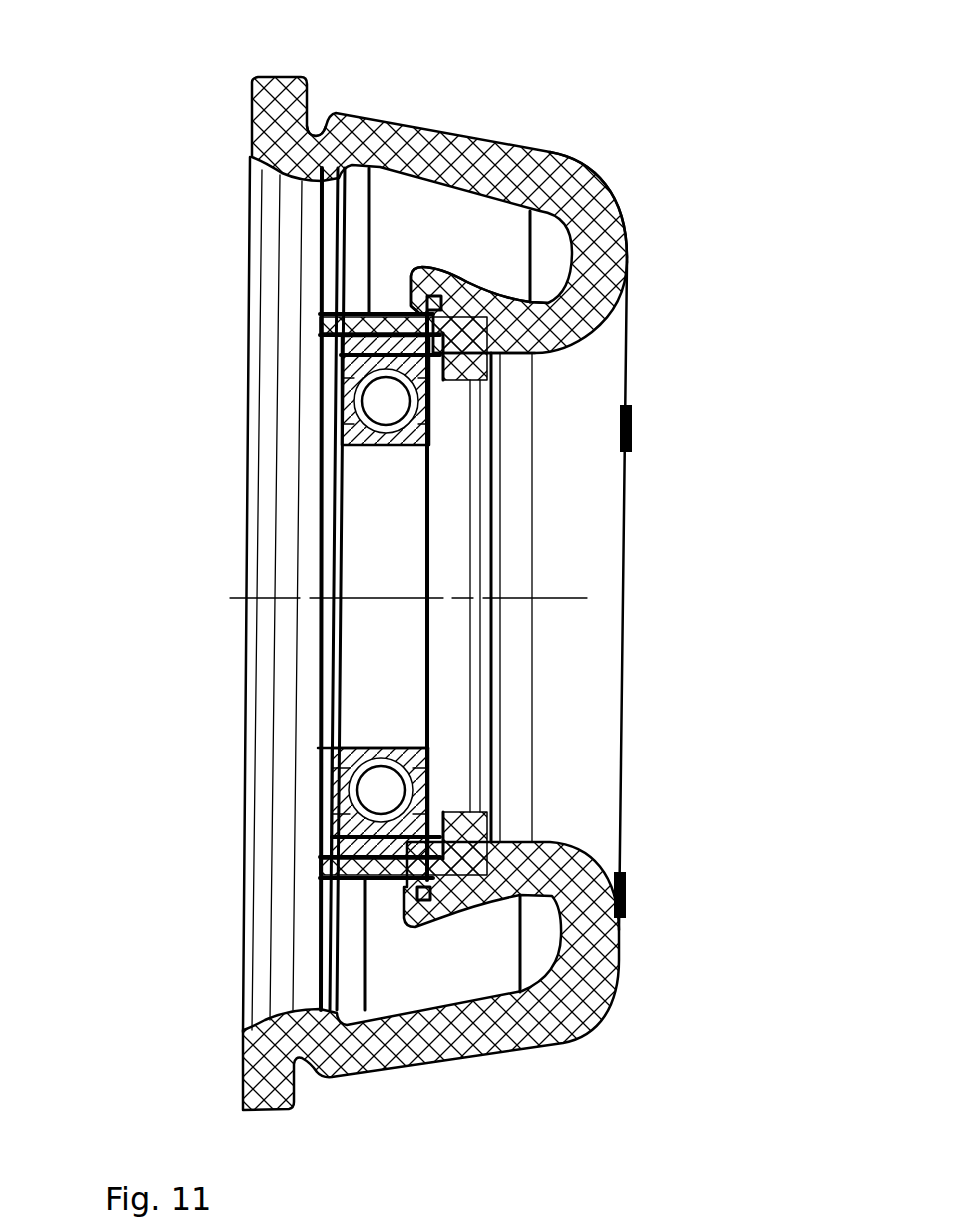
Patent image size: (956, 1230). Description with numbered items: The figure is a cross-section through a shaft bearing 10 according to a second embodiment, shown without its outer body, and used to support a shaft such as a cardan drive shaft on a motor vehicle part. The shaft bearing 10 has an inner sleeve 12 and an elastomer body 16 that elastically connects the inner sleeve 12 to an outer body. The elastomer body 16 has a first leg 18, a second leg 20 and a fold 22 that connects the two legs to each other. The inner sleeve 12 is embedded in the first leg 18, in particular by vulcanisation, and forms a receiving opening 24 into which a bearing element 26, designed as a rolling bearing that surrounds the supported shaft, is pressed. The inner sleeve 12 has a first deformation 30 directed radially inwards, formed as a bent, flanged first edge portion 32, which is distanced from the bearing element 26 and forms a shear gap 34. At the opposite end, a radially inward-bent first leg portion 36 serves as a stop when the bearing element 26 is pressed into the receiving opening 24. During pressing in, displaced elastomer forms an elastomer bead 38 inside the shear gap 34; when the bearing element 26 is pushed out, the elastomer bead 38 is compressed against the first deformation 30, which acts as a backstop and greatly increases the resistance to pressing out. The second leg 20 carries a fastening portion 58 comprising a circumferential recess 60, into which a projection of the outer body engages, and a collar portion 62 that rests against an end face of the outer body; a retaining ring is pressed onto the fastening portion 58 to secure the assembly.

The shaft bearing 10 is at (592, 106).
The inner sleeve 12 is at (476, 326).
The elastomer body 16 is at (606, 178).
The first leg 18 is at (397, 307).
The second leg 20 is at (441, 132).
The fold 22 is at (633, 240).
The receiving opening 24 is at (316, 375).
The bearing element 26 is at (340, 421).
The first deformation 30 is at (320, 846).
The first edge portion 32 is at (316, 834).
The shear gap 34 is at (318, 790).
The first leg portion 36 is at (497, 820).
The elastomer bead 38 is at (320, 356).
The fastening portion 58 is at (243, 165).
The circumferential recess 60 is at (314, 130).
The collar portion 62 is at (251, 95).